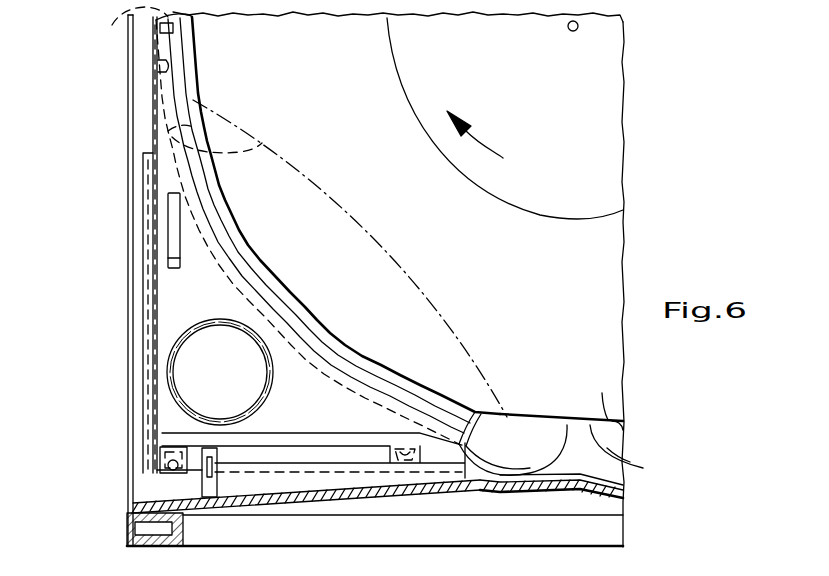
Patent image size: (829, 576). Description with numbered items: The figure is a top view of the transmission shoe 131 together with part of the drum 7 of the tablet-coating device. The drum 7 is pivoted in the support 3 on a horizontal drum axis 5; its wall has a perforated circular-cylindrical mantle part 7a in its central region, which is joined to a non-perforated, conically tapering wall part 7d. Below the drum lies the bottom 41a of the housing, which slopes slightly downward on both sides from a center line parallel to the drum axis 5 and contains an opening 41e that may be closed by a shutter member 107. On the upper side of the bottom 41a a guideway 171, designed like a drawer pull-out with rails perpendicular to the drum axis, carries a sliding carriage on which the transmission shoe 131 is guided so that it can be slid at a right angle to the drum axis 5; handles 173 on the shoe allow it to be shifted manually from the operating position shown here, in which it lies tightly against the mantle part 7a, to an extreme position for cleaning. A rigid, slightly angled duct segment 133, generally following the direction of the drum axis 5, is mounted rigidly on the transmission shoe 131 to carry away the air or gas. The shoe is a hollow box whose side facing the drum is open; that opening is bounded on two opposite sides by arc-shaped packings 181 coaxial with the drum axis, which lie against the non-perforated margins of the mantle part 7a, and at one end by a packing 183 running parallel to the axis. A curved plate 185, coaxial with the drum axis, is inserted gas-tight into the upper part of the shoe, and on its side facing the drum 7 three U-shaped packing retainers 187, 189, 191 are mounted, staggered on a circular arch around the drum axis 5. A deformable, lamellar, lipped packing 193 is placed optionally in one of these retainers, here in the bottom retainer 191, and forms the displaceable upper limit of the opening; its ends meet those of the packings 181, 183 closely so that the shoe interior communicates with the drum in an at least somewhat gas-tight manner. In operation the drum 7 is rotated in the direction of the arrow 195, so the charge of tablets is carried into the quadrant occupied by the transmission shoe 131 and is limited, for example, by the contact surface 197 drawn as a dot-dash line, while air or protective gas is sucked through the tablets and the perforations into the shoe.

The support 3 is at (127, 527).
The drum axis 5 is at (577, 30).
The drum 7 is at (643, 468).
The circular-cylindrical mantle part 7a is at (630, 444).
The conically tapering wall part 7d is at (630, 422).
The bottom 41a is at (153, 500).
The opening 41e is at (554, 418).
The shutter member 107 is at (605, 494).
The transmission shoe 131 is at (142, 267).
The rigid duct segment 133 is at (270, 392).
The guideway 171 is at (157, 470).
The handles 173 is at (168, 220).
The packing 181 is at (340, 340).
The packing 183 is at (500, 437).
The curved plate 185 is at (157, 125).
The packing retainer 187 is at (112, 25).
The packing retainer 189 is at (157, 63).
The packing retainer 191 is at (213, 192).
The packing 193 is at (262, 143).
The arrow 195 is at (483, 150).
The contact surface 197 is at (318, 188).